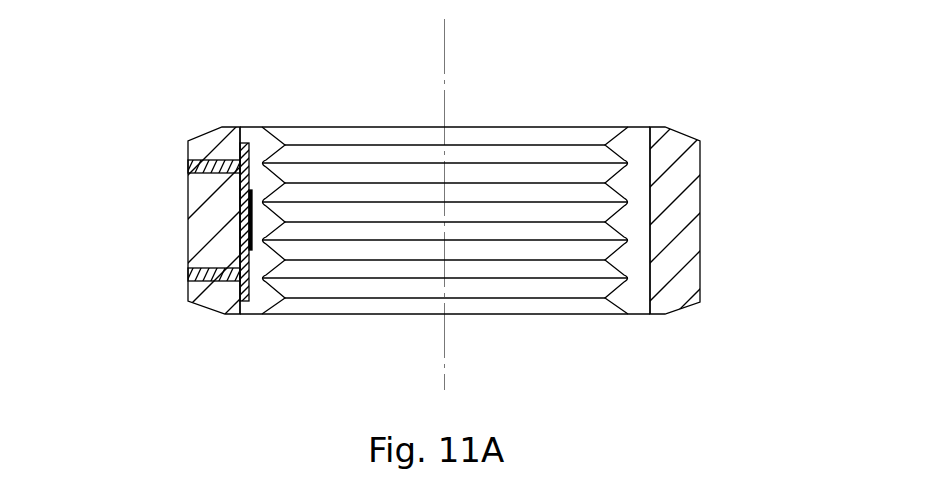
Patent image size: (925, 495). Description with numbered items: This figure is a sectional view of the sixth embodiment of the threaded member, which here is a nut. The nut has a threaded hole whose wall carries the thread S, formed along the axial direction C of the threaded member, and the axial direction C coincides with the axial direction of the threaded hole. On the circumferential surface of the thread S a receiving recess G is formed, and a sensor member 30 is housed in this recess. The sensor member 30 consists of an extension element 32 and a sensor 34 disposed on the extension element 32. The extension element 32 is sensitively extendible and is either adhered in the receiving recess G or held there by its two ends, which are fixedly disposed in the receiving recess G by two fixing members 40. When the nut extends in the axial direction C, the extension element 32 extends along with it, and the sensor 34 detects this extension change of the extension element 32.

The sensor member 30 is at (139, 222).
The extension element 32 is at (250, 196).
The sensor 34 is at (250, 237).
The fixing member 40 is at (193, 167).
The receiving recess G is at (253, 142).
The thread S is at (365, 182).
The axial direction C is at (445, 85).